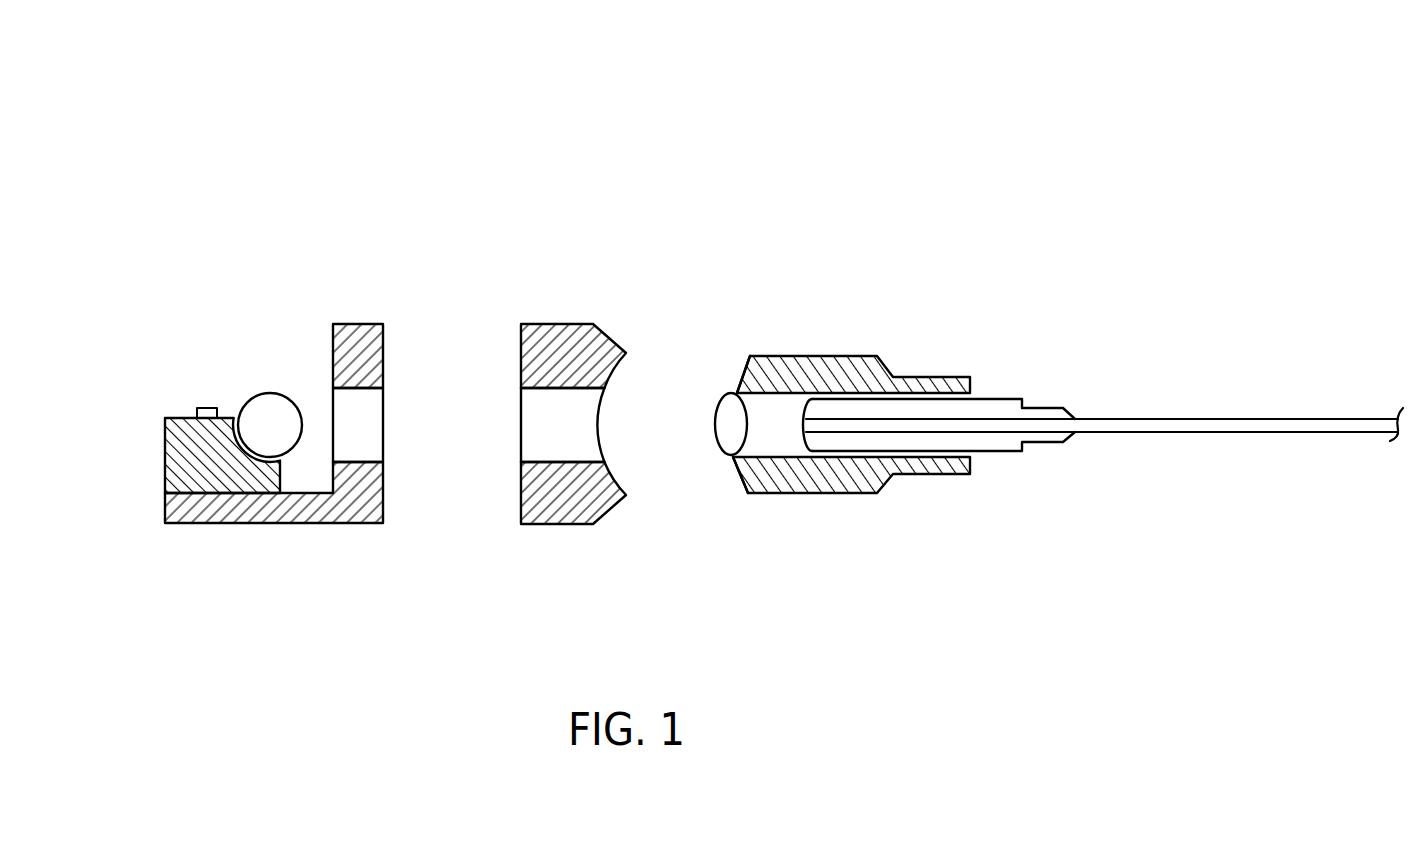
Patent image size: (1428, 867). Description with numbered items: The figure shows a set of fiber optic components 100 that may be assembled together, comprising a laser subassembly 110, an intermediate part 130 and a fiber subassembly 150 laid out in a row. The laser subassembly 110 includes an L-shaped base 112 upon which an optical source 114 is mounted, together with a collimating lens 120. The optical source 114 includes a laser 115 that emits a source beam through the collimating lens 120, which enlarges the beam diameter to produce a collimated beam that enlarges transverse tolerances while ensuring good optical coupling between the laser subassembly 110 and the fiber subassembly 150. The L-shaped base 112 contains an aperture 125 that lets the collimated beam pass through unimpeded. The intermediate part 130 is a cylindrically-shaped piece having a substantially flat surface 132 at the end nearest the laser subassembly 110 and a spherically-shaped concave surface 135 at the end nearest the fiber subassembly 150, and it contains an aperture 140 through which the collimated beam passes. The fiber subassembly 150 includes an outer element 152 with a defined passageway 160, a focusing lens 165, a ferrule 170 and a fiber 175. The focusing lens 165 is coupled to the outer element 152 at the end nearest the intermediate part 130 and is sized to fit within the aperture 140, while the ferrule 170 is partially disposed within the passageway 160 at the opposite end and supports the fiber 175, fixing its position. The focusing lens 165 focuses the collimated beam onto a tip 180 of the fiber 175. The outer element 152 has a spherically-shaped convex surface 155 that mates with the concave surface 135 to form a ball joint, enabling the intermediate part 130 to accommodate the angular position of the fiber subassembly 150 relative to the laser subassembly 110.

The set of fiber optic components 100 is at (318, 143).
The laser subassembly 110 is at (147, 508).
The L-shaped base 112 is at (358, 527).
The optical source 114 is at (173, 442).
The laser 115 is at (210, 408).
The collimating lens 120 is at (248, 396).
The aperture 125 is at (358, 388).
The intermediate part 130 is at (577, 323).
The flat surface 132 is at (520, 497).
The concave surface 135 is at (632, 370).
The aperture 140 is at (547, 388).
The fiber subassembly 150 is at (863, 324).
The outer element 152 is at (790, 355).
The convex surface 155 is at (736, 390).
The passageway 160 is at (745, 495).
The focusing lens 165 is at (713, 442).
The ferrule 170 is at (996, 398).
The fiber 175 is at (1145, 419).
The tip 180 is at (802, 426).